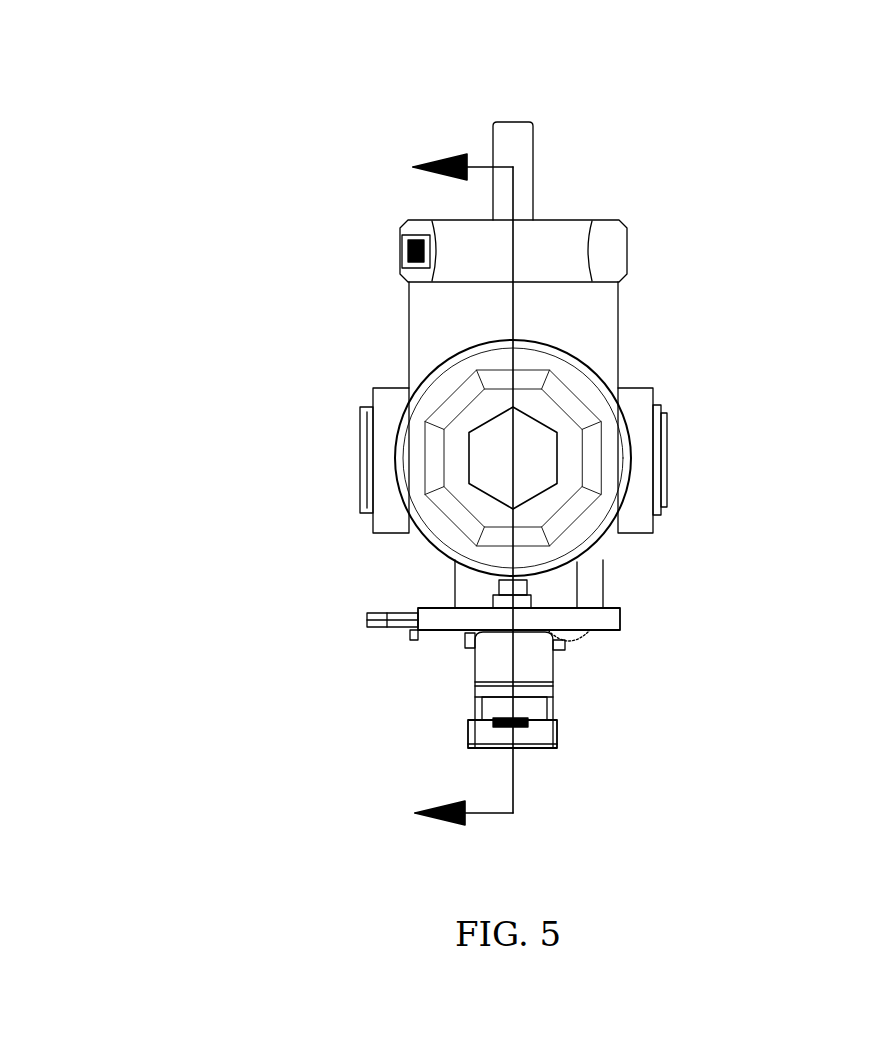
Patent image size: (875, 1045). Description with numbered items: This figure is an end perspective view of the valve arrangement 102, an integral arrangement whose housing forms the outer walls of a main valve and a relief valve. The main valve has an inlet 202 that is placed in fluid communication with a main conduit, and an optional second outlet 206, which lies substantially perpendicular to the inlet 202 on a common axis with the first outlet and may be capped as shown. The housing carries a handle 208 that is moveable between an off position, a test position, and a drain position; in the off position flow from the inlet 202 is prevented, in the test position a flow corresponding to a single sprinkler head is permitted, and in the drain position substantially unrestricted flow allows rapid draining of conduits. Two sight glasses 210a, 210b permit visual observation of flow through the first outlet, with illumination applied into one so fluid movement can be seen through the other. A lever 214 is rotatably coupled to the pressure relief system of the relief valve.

The valve arrangement 102 is at (123, 192).
The inlet 202 is at (580, 204).
The second outlet 206 is at (514, 455).
The handle 208 is at (556, 728).
The sight glass 210a is at (357, 453).
The sight glass 210b is at (667, 453).
The lever 214 is at (527, 121).